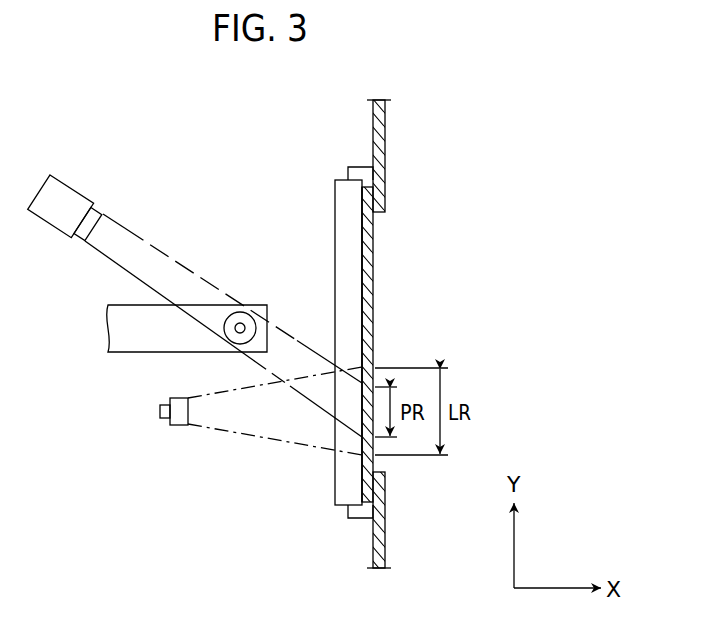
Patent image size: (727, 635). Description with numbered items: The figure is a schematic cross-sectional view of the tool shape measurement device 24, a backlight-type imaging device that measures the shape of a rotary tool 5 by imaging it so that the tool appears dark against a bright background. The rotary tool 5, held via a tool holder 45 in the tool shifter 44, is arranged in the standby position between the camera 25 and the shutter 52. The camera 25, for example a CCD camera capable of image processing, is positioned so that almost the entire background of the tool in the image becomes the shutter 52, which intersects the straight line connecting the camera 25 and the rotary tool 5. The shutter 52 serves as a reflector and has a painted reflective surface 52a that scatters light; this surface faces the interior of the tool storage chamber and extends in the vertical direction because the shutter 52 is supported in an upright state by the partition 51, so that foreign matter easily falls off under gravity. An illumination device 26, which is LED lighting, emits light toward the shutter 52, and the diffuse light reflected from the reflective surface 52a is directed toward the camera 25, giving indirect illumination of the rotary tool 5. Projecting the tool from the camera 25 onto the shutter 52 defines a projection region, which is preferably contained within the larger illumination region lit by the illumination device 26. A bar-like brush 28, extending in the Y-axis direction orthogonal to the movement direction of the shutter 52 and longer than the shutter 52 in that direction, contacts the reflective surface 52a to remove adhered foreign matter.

The tool shape measurement device 24 is at (152, 141).
The camera 25 is at (57, 196).
The illumination device 26 is at (177, 425).
The brush 28 is at (343, 188).
The rotary tool 5 is at (241, 326).
The tool shifter 44 is at (123, 345).
The tool holder 45 is at (225, 333).
The partition 51 is at (384, 110).
The shutter 52 is at (374, 245).
The reflective surface 52a is at (362, 277).